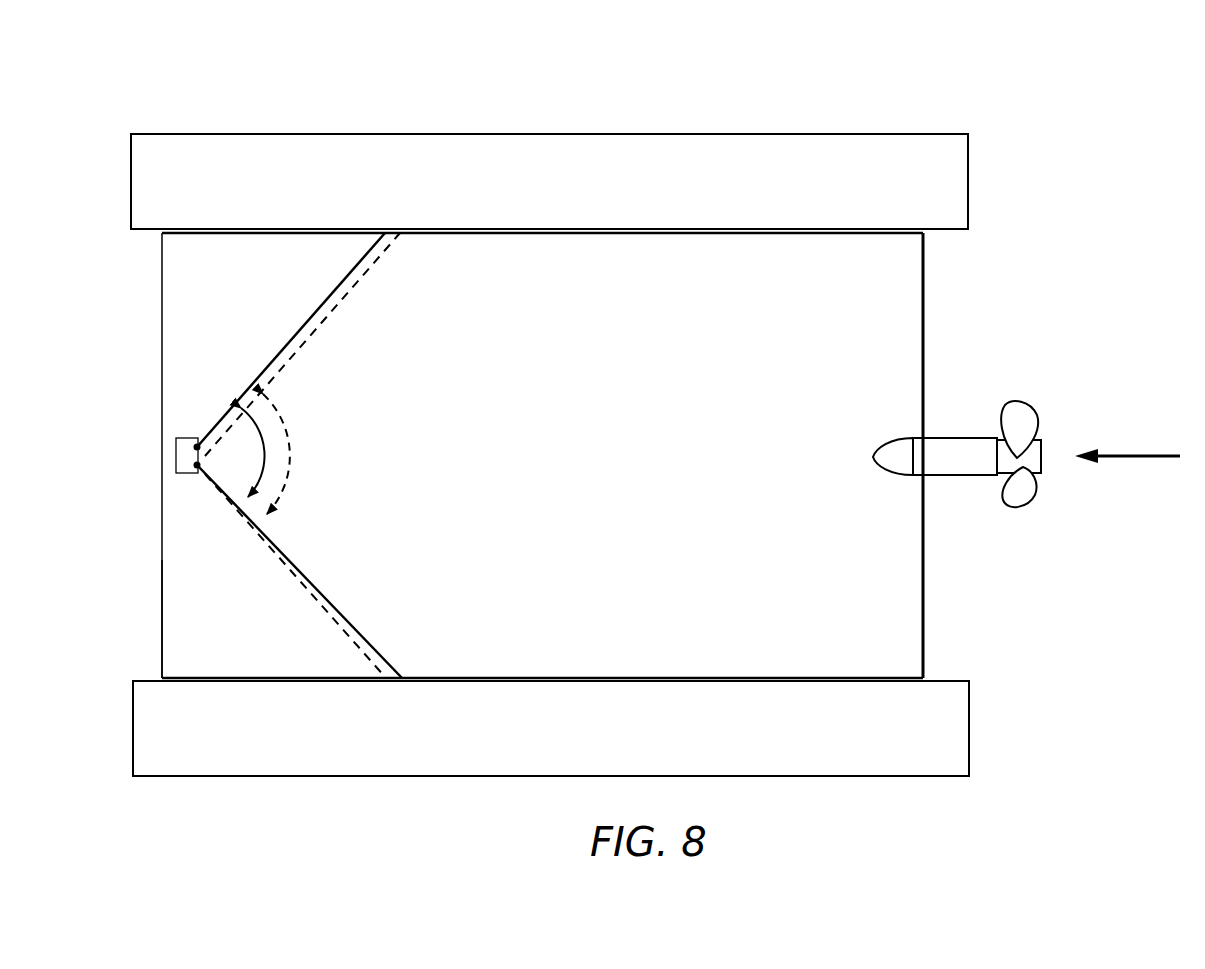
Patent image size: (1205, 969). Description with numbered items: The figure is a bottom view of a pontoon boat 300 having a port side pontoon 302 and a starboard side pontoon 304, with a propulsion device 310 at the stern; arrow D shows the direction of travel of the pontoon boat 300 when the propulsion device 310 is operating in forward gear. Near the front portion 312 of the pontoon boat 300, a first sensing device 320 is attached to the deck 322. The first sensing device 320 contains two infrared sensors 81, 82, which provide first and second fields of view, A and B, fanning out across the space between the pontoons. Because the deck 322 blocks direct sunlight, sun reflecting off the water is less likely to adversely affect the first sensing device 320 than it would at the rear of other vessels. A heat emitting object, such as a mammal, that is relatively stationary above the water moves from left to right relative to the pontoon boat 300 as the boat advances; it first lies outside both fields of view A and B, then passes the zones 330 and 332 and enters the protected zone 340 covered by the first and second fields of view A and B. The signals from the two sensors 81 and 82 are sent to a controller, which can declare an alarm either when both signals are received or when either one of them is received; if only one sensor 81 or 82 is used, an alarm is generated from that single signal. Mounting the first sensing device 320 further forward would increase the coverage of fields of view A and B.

The pontoon boat 300 is at (986, 101).
The port side pontoon 302 is at (939, 186).
The starboard side pontoon 304 is at (945, 730).
The propulsion device 310 is at (957, 462).
The front portion 312 is at (162, 303).
The first sensing device 320 is at (187, 477).
The deck 322 is at (179, 648).
The zone 330 is at (208, 350).
The zone 332 is at (210, 592).
The protected zone 340 is at (765, 377).
The first sensor 81 is at (190, 447).
The second sensor 82 is at (190, 465).
The first field of view A is at (258, 445).
The second field of view B is at (279, 482).
The direction of travel D is at (1137, 460).